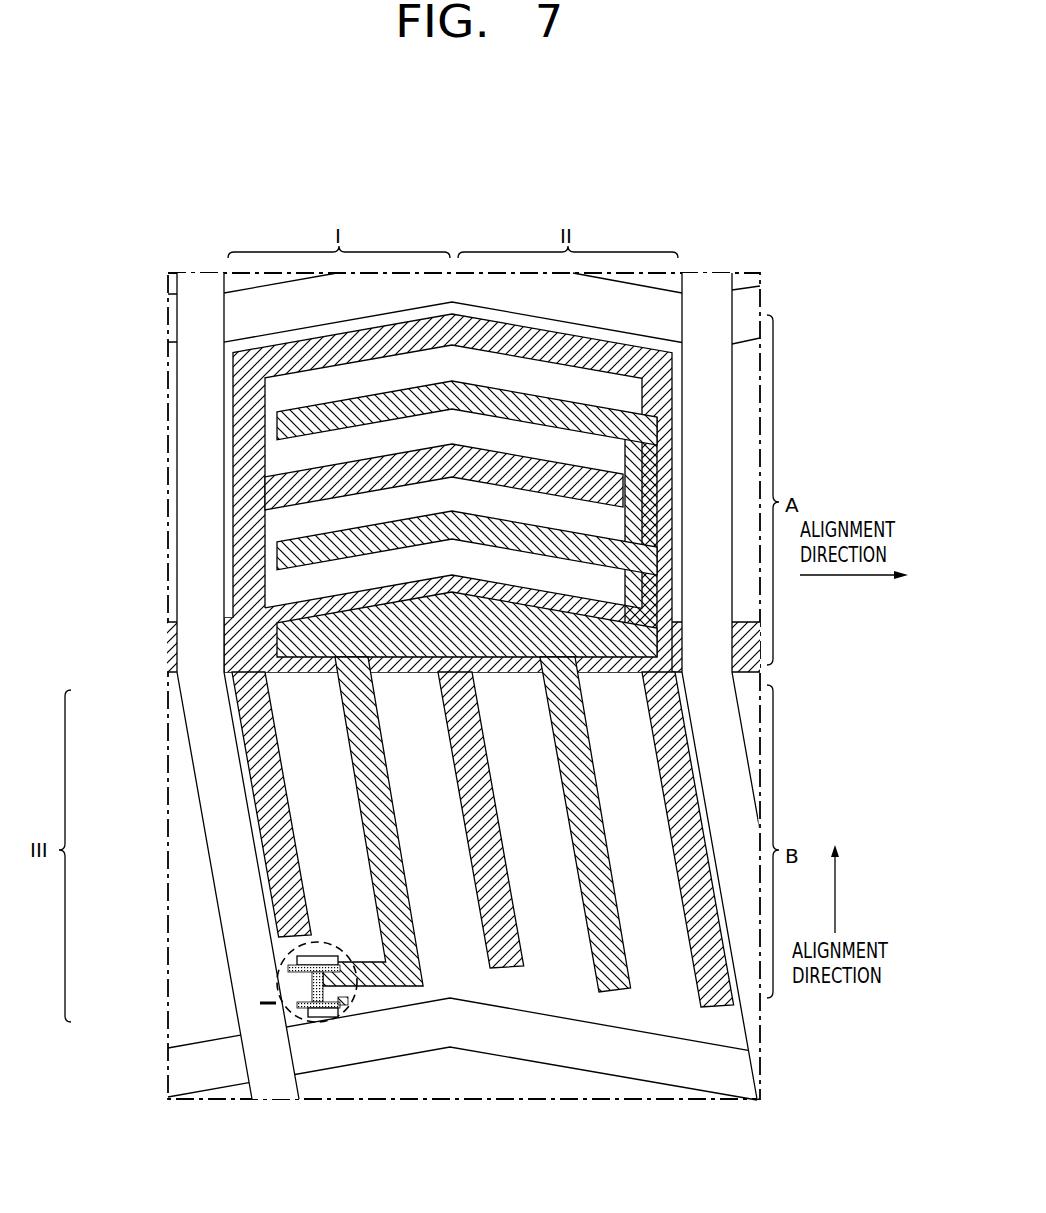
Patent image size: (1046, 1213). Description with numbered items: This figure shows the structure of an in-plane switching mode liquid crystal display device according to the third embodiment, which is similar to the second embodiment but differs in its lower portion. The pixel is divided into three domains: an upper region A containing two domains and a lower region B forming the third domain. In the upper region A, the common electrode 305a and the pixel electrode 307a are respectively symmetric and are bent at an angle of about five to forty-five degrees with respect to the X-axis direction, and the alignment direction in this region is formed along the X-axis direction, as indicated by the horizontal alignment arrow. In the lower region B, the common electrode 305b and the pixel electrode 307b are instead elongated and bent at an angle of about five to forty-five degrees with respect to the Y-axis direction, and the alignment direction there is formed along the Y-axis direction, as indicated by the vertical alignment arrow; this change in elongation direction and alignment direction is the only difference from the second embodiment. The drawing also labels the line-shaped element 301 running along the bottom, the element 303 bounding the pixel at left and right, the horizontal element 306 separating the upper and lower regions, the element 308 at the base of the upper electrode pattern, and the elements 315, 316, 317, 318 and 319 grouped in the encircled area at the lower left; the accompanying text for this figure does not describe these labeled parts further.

The gate line 301 is at (482, 1043).
The data line 303 is at (220, 843).
The common electrode 305a is at (327, 352).
The common electrode 305b is at (263, 786).
The common line 306 is at (238, 647).
The pixel electrode 307a is at (287, 423).
The pixel electrode 307b is at (615, 982).
The connection electrode 308 is at (317, 620).
The semiconductor layer 315 is at (260, 1003).
The source electrode 316 is at (318, 1017).
The drain electrode 317 is at (290, 967).
The contact hole 318 is at (297, 990).
The thin film transistor 319 is at (348, 1006).